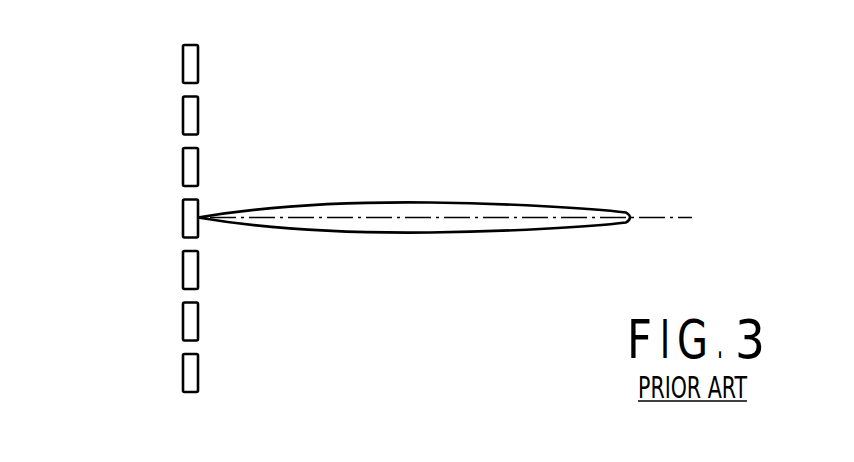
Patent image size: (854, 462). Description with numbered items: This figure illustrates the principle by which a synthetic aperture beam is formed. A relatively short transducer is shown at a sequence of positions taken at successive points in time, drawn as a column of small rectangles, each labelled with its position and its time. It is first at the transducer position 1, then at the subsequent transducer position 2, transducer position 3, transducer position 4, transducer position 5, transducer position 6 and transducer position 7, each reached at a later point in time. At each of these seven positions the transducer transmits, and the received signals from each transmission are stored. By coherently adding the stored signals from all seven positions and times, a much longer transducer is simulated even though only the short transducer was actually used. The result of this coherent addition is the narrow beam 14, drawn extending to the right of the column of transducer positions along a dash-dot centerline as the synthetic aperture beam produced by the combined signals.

The narrow beam 14 is at (393, 202).
The transducer position X1 at time t1 1 is at (135, 375).
The transducer position X2 at time t2 2 is at (135, 324).
The transducer position X3 at time t3 3 is at (135, 272).
The transducer position X4 at time t4 4 is at (135, 221).
The transducer position X5 at time t5 5 is at (135, 169).
The transducer position X6 at time t6 6 is at (135, 118).
The transducer position X7 at time t7 7 is at (135, 66).